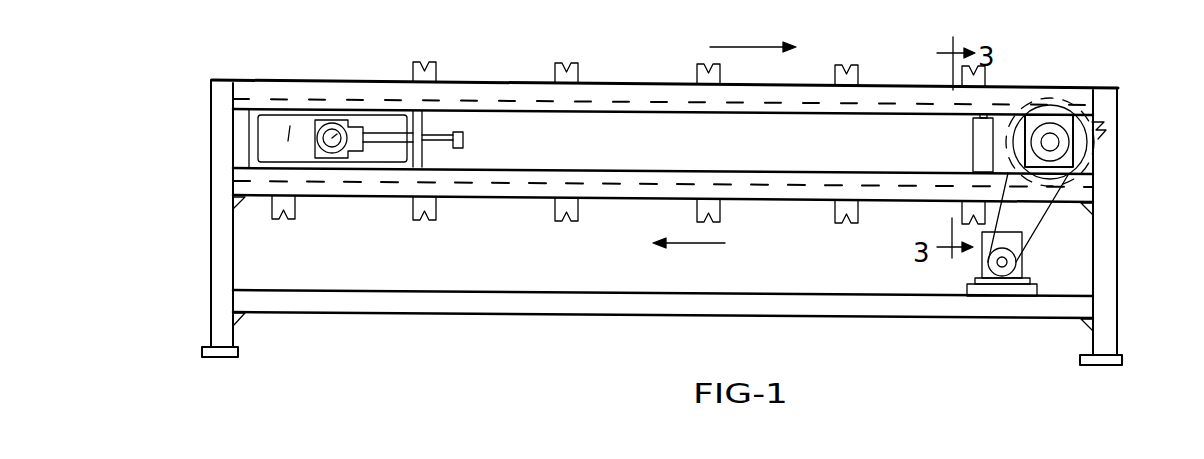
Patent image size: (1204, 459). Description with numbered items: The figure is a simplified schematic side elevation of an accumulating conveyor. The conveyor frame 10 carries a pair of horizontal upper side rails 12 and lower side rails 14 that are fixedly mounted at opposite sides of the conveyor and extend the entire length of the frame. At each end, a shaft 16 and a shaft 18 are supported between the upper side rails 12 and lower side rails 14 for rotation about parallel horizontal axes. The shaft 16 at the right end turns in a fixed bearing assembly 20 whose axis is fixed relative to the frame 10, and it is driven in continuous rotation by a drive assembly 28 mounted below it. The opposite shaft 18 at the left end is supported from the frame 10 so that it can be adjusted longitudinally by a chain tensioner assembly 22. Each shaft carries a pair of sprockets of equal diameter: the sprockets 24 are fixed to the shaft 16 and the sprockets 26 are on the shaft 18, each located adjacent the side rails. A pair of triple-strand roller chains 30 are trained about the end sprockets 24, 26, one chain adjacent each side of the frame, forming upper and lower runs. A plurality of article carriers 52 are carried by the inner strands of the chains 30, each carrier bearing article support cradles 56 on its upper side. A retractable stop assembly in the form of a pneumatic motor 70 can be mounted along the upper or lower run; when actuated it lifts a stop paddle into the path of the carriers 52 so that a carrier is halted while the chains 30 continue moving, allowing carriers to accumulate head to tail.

The conveyor frame 10 is at (1163, 216).
The upper side rails 12 is at (871, 92).
The lower side rails 14 is at (455, 192).
The shaft 16 is at (1050, 142).
The shaft 18 is at (322, 132).
The fixed bearing assembly 20 is at (1087, 156).
The chain tensioner assembly 22 is at (365, 128).
The sprockets 24 is at (1087, 167).
The sprockets 26 is at (295, 156).
The drive assembly 28 is at (1037, 237).
The triple-strand roller chains 30 is at (500, 97).
The article carriers 52 is at (493, 54).
The article support cradles 56 is at (396, 211).
The pneumatic motor 70 is at (975, 142).